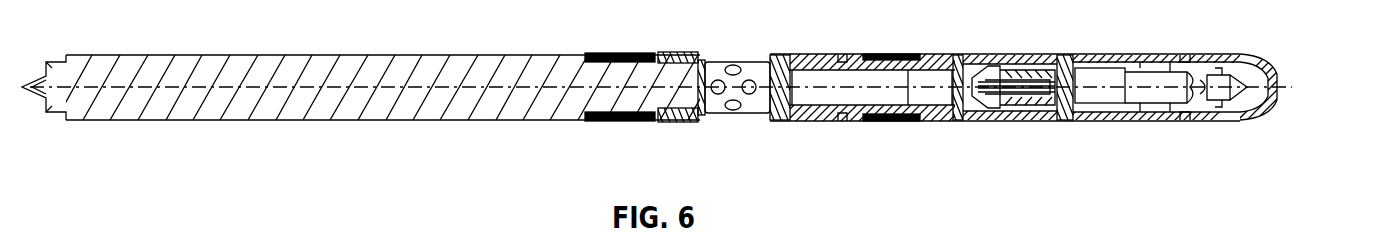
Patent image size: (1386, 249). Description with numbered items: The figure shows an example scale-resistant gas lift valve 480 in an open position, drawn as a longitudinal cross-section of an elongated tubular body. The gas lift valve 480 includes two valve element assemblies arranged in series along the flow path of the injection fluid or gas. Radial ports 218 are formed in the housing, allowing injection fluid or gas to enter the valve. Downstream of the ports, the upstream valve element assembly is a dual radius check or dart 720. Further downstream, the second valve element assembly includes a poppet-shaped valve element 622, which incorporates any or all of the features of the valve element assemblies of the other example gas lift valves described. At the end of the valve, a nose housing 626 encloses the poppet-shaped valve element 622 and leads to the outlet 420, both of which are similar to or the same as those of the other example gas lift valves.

The gas lift valve 480 is at (292, 31).
The radial ports 218 is at (752, 70).
The dual radius check or dart 720 is at (1027, 110).
The nose housing 626 is at (1253, 57).
The poppet-shaped valve element 622 is at (1230, 100).
The outlet 420 is at (1282, 91).